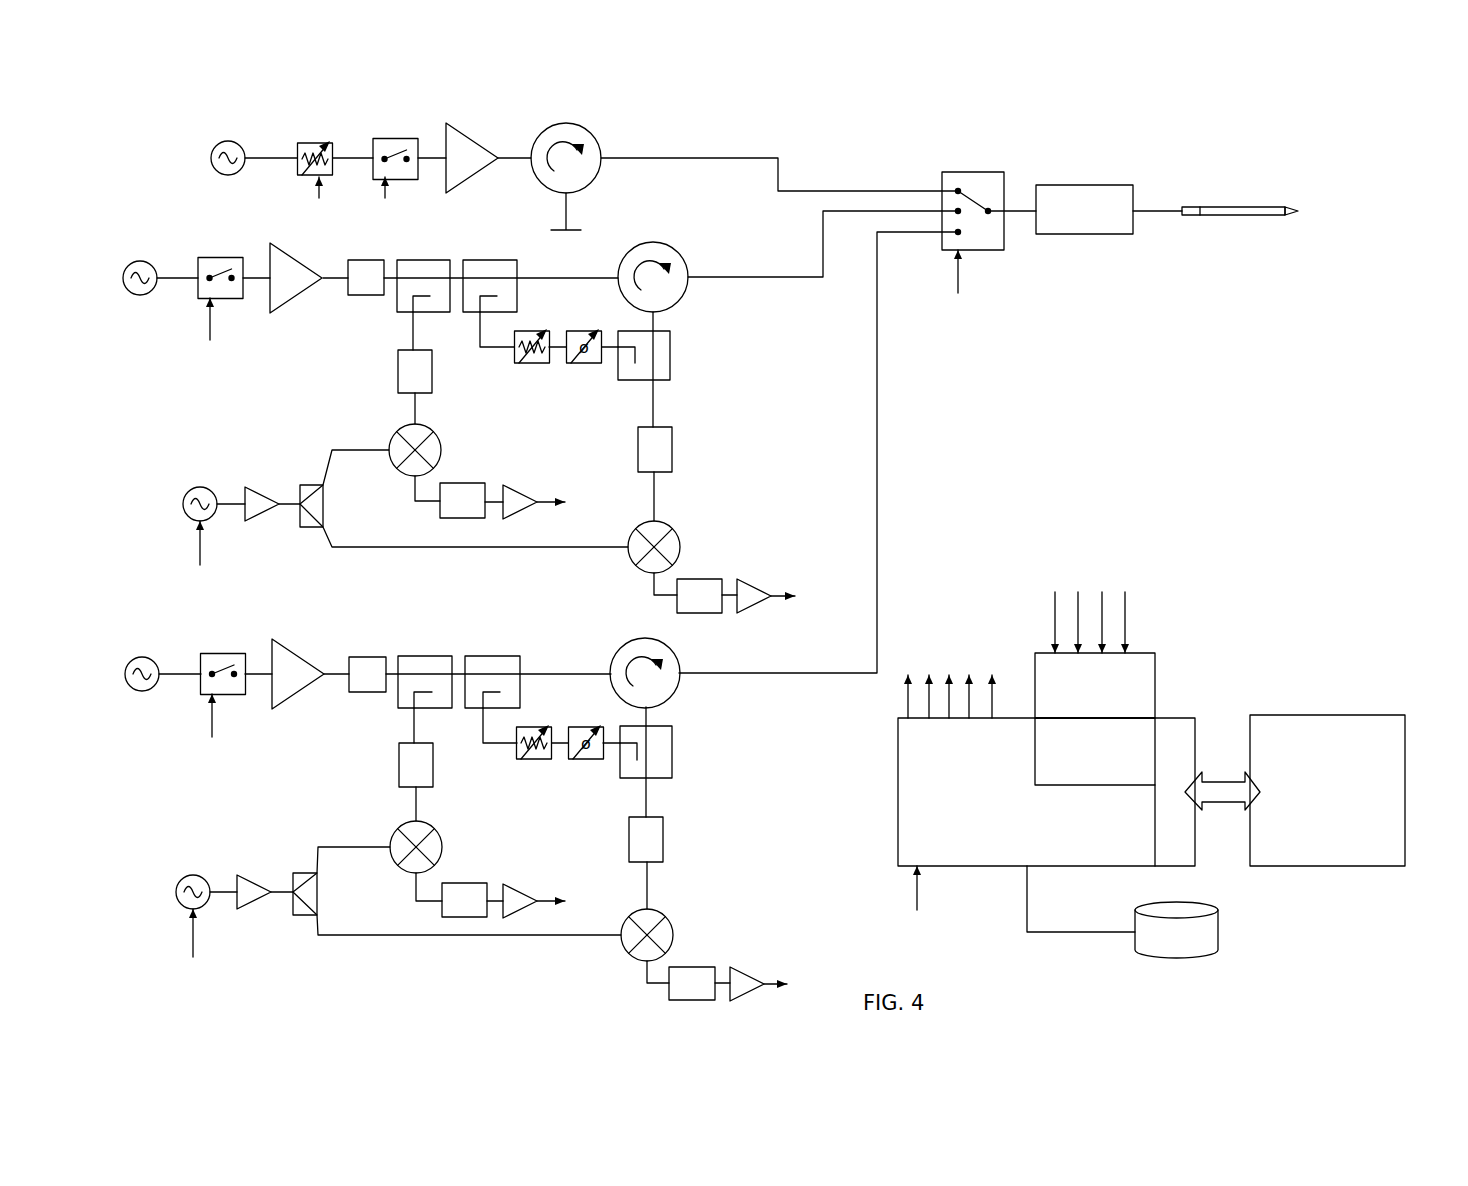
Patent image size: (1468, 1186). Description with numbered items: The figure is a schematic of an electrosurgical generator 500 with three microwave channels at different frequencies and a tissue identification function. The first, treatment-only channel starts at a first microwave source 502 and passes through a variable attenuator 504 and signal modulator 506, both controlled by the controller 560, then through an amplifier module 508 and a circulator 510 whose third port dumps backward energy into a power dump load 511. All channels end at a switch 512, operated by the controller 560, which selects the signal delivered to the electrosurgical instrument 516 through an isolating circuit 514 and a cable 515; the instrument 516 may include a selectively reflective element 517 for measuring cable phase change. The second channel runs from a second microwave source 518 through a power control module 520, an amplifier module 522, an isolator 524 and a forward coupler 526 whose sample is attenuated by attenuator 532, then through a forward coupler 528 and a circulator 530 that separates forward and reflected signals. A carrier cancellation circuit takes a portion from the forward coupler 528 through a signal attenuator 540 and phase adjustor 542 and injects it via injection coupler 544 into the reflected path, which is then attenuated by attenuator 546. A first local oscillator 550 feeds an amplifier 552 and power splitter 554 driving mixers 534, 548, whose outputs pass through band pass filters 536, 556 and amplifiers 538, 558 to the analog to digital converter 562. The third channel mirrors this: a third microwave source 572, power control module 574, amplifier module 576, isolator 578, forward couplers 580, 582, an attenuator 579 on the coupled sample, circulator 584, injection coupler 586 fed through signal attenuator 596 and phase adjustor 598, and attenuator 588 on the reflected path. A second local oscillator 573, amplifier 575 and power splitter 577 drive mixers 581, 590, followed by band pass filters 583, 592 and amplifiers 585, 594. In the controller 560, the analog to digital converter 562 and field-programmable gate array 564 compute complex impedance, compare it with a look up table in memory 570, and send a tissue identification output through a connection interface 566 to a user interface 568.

The electrosurgical generator 500 is at (1260, 373).
The first microwave source 502 is at (247, 143).
The variable attenuator 504 is at (332, 143).
The signal modulator 506 is at (408, 135).
The amplifier module 508 is at (480, 143).
The circulator 510 is at (597, 143).
The power dump load 511 is at (573, 227).
The switch 512 is at (983, 170).
The isolating circuit 514 is at (1098, 185).
The cable 515 is at (1160, 208).
The electrosurgical instrument 516 is at (1255, 205).
The selectively reflective element 517 is at (1190, 215).
The second microwave source 518 is at (153, 263).
The power control module 520 is at (228, 257).
The amplifier module 522 is at (300, 260).
The isolator 524 is at (357, 297).
The forward coupler 526 is at (427, 260).
The forward coupler 528 is at (487, 260).
The circulator 530 is at (678, 248).
The attenuator 532 is at (397, 368).
The mixer 534 is at (402, 475).
The band pass filter 536 is at (462, 482).
The amplifier 538 is at (517, 485).
The signal attenuator 540 is at (538, 367).
The phase adjustor 542 is at (590, 367).
The injection coupler 544 is at (670, 353).
The attenuator 546 is at (673, 450).
The mixer 548 is at (675, 533).
The first local oscillator 550 is at (212, 487).
The amplifier 552 is at (265, 492).
The power splitter 554 is at (305, 528).
The band pass filter 556 is at (707, 578).
The amplifier 558 is at (752, 580).
The controller 560 is at (898, 793).
The analog to digital converter 562 is at (1155, 660).
The field-programmable gate array 564 is at (1038, 742).
The connection interface 566 is at (1182, 727).
The user interface 568 is at (1378, 715).
The memory 570 is at (1222, 923).
The third microwave source 572 is at (160, 663).
The second local oscillator 573 is at (202, 873).
The power control module 574 is at (230, 653).
The amplifier 575 is at (257, 875).
The amplifier module 576 is at (300, 655).
The power splitter 577 is at (297, 915).
The isolator 578 is at (368, 657).
The filter 579 is at (398, 762).
The forward coupler 580 is at (427, 656).
The mixer 581 is at (392, 860).
The forward coupler 582 is at (497, 656).
The band pass filter 583 is at (465, 883).
The circulator 584 is at (612, 662).
The amplifier 585 is at (517, 883).
The injection coupler 586 is at (673, 748).
The attenuator 588 is at (665, 835).
The mixer 590 is at (660, 912).
The band pass filter 592 is at (697, 965).
The amplifier 594 is at (745, 967).
The signal attenuator 596 is at (537, 762).
The phase adjustor 598 is at (590, 762).